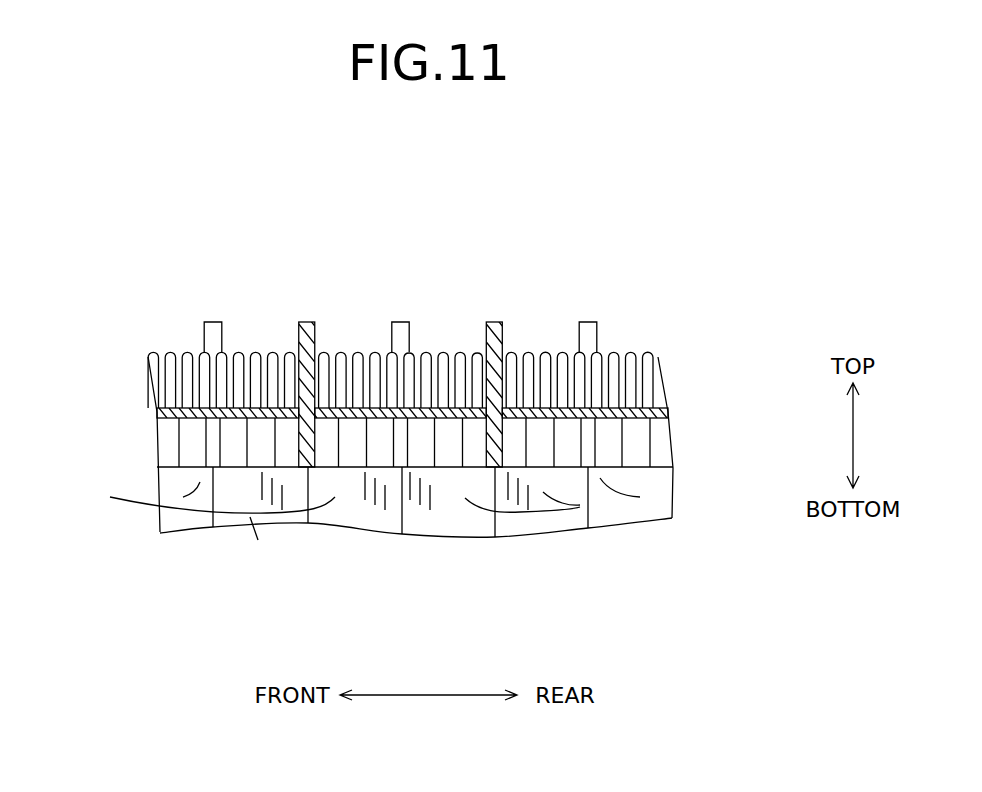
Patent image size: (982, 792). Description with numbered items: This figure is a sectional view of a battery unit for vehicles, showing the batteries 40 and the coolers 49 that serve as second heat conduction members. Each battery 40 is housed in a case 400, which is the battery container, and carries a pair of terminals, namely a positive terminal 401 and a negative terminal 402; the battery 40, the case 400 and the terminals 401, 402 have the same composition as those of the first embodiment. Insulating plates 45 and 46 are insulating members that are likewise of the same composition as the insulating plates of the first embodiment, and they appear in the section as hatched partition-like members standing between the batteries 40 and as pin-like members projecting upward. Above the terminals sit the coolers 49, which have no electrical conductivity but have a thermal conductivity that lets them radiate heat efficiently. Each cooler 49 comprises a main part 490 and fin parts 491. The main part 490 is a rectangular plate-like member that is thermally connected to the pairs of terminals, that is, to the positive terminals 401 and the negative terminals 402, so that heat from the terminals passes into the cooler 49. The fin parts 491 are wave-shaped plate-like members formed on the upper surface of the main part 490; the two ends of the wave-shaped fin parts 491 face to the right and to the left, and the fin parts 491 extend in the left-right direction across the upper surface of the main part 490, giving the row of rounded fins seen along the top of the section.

The battery 40 is at (352, 523).
The insulating plate 45 is at (307, 322).
The insulating plate 46 is at (217, 323).
The cooler 49 is at (405, 334).
The main part 490 is at (177, 417).
The fin part 491 is at (167, 367).
The case 400 is at (257, 493).
The positive terminal 401 is at (262, 442).
The negative terminal 402 is at (170, 438).